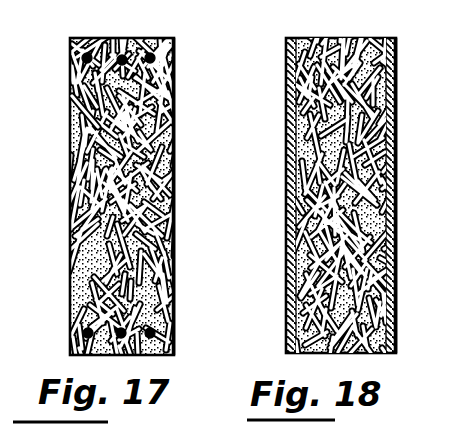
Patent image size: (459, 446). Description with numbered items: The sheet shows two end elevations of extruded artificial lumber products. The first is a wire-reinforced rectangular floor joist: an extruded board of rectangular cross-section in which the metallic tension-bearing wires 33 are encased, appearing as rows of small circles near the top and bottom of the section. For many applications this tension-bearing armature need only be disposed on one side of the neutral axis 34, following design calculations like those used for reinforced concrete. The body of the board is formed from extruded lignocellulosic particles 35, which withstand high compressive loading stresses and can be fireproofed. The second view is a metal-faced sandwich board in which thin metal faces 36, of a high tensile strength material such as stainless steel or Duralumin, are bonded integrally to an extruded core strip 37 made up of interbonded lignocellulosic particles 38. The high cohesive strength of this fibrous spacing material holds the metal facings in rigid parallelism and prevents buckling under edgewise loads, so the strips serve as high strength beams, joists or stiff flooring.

In FIG. 17, the metallic tension-bearing wires 33 is at (152, 354).
In FIG. 17, the neutral axis 34 is at (197, 198).
In FIG. 17, the extruded lignocellulosic particles 35 is at (73, 130).
In FIG. 18, the thin metal faces 36 is at (415, 90).
In FIG. 18, the extruded core strip 37 is at (331, 354).
In FIG. 18, the interbonded lignocellulosic particles 38 is at (302, 211).